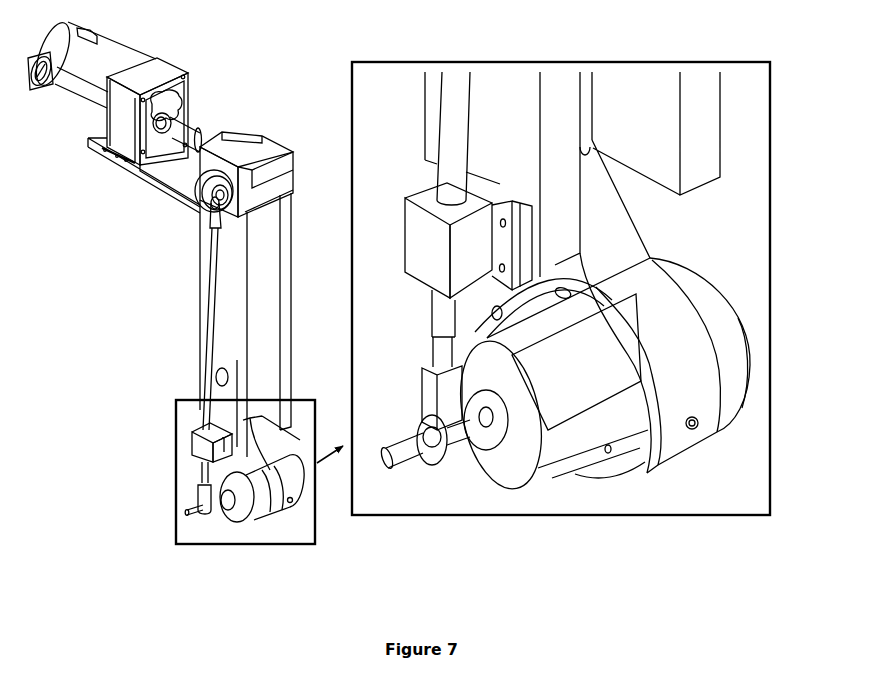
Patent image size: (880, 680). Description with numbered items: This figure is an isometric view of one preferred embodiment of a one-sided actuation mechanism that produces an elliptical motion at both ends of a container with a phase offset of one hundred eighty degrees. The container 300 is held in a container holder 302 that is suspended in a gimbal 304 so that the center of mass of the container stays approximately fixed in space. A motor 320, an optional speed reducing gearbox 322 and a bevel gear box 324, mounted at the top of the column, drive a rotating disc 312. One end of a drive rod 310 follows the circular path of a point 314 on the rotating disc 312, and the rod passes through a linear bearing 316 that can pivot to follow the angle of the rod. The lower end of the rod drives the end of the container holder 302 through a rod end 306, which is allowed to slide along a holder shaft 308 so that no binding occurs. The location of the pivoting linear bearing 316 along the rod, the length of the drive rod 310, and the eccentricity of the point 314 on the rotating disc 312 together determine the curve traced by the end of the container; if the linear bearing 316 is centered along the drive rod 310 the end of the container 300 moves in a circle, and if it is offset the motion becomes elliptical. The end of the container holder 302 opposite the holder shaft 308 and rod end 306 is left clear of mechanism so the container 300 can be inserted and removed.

The container 300 is at (734, 336).
The container holder 302 is at (520, 449).
The gimbal 304 is at (674, 310).
The rod end 306 is at (446, 402).
The holder shaft 308 is at (400, 457).
The drive rod 310 is at (204, 268).
The rotating disc 312 is at (196, 185).
The point 314 is at (212, 206).
The linear bearing 316 is at (198, 444).
The motor 320 is at (106, 37).
The speed reducing gearbox 322 is at (172, 58).
The bevel gear box 324 is at (236, 148).